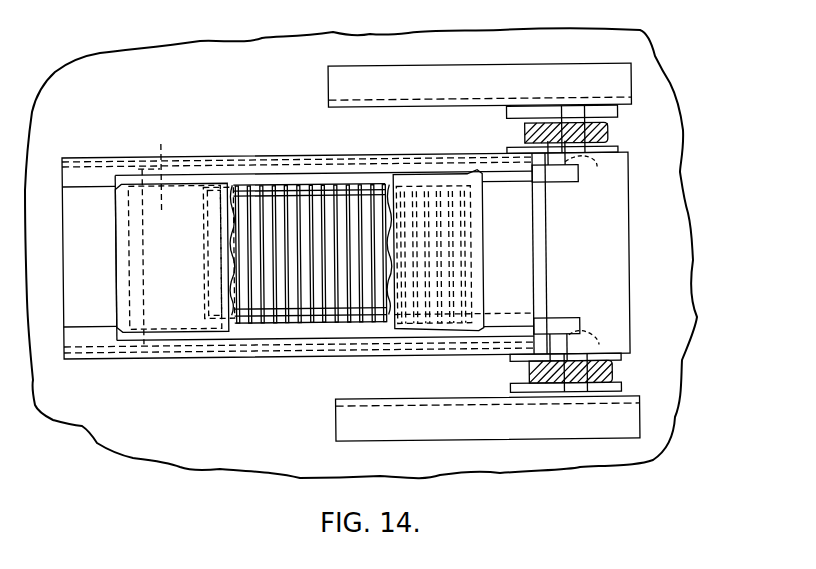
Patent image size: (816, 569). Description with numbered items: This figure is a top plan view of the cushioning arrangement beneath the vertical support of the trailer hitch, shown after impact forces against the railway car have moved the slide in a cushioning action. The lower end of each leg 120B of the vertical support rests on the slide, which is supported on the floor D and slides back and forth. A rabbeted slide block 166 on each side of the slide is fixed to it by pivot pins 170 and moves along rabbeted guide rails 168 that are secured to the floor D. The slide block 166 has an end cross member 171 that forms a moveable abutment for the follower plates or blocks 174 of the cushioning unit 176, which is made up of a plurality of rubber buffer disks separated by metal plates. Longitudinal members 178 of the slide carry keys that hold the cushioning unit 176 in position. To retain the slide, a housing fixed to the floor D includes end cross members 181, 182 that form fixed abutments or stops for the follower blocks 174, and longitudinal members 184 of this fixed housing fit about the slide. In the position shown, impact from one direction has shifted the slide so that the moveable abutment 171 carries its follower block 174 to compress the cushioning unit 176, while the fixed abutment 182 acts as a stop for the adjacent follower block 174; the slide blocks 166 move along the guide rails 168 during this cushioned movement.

The leg 120B is at (608, 140).
The rabbeted slide block 166 is at (507, 117).
The rabbeted guide rail 168 is at (378, 68).
The pivot pin 170 is at (598, 174).
The end cross member 171 is at (166, 136).
The follower plate or block 174 is at (203, 268).
The cushioning unit 176 is at (292, 312).
The longitudinal member 178 is at (557, 188).
The end cross member 181 is at (72, 216).
The end cross member 182 is at (518, 229).
The longitudinal member 184 is at (83, 174).
The floor D is at (688, 211).